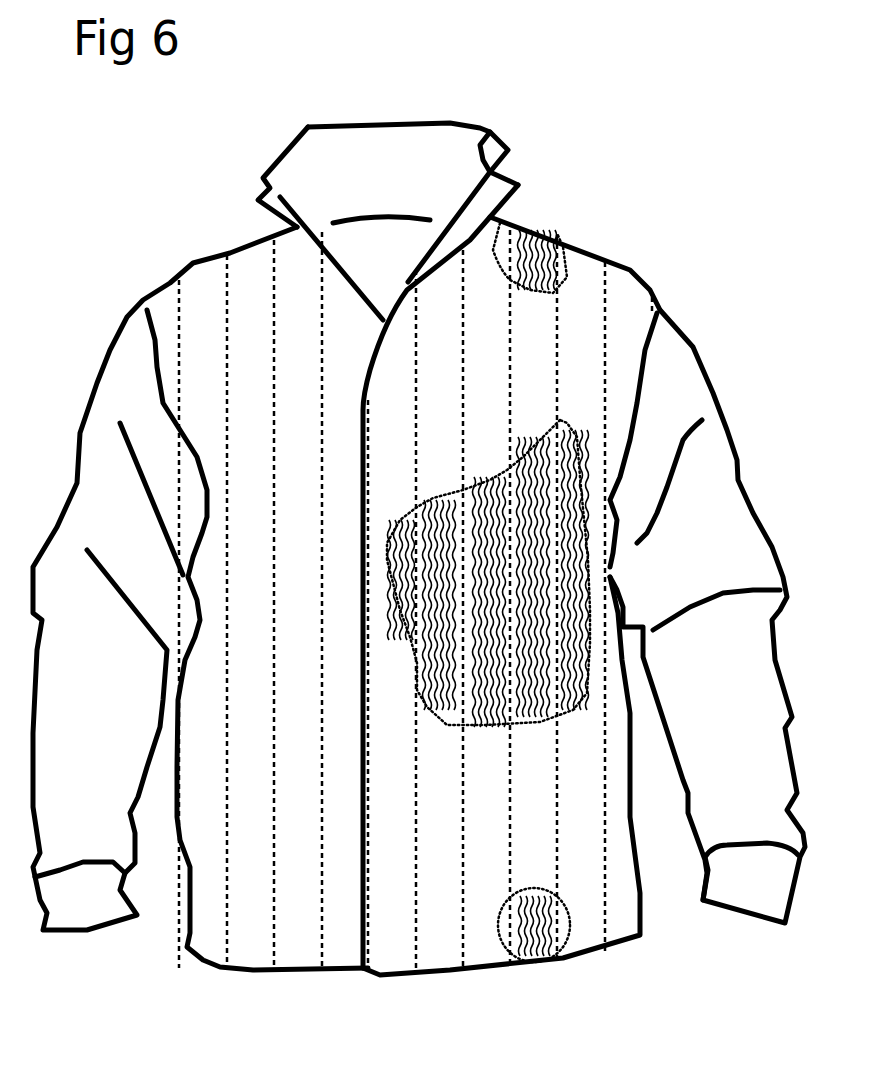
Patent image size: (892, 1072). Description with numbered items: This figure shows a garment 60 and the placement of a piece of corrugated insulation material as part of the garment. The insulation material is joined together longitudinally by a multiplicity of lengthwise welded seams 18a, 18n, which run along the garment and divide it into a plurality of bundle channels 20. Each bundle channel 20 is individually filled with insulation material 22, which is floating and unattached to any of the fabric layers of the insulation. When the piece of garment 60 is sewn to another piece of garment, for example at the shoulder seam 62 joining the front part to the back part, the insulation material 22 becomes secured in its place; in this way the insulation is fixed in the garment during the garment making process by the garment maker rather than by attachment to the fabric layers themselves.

The garment 60 is at (410, 140).
The shoulder seam 62 is at (527, 230).
The insulation material 22 is at (537, 223).
The lengthwise welded seam 18a is at (465, 317).
The lengthwise welded seam 18n is at (510, 368).
The bundle channel 20 is at (518, 475).